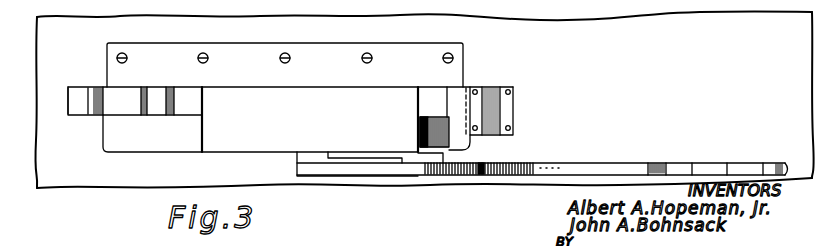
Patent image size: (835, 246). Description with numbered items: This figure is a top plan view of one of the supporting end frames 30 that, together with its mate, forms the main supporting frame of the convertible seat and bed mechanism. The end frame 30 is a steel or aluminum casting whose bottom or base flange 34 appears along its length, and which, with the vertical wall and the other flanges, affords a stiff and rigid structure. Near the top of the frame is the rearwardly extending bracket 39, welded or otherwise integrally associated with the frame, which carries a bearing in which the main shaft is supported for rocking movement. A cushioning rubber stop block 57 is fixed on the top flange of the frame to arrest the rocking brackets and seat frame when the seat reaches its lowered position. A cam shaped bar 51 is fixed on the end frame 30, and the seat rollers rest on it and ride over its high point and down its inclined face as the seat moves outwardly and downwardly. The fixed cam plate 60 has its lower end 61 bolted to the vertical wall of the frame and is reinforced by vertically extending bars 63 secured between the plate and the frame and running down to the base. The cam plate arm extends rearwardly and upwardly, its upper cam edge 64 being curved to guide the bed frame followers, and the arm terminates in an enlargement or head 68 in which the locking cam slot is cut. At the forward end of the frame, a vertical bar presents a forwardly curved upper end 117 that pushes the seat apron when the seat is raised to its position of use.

The bottom or base flange 34 is at (178, 51).
The cam shaped bar 51 is at (197, 101).
The forwardly curved upper end 117 is at (92, 113).
The end frame 30 is at (240, 143).
The rearwardly extending bracket 39 is at (515, 96).
The cushioning rubber stop block 57 is at (430, 124).
The vertically extending bar 63 is at (416, 150).
The lower end 61 is at (393, 177).
The upper cam edge 64 is at (538, 165).
The fixed cam plate 60 is at (633, 159).
The enlargement or head 68 is at (744, 161).